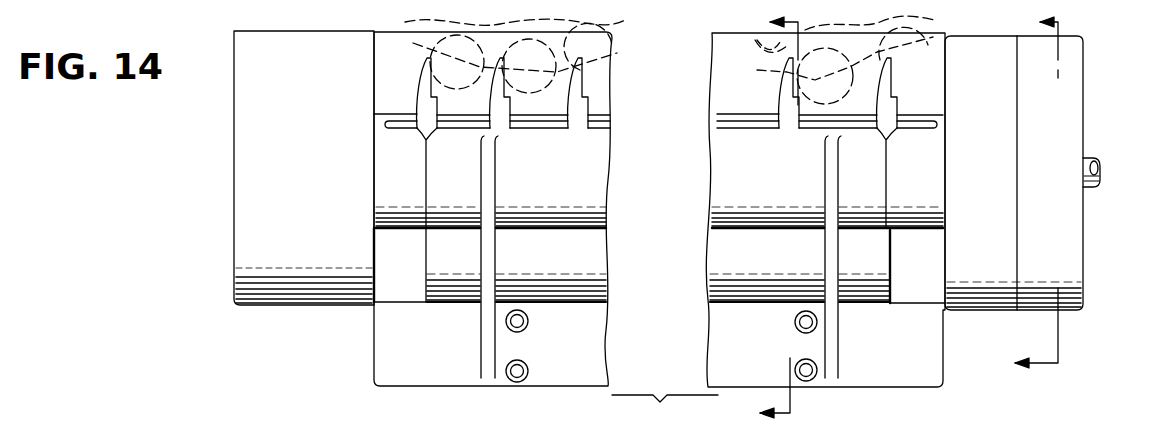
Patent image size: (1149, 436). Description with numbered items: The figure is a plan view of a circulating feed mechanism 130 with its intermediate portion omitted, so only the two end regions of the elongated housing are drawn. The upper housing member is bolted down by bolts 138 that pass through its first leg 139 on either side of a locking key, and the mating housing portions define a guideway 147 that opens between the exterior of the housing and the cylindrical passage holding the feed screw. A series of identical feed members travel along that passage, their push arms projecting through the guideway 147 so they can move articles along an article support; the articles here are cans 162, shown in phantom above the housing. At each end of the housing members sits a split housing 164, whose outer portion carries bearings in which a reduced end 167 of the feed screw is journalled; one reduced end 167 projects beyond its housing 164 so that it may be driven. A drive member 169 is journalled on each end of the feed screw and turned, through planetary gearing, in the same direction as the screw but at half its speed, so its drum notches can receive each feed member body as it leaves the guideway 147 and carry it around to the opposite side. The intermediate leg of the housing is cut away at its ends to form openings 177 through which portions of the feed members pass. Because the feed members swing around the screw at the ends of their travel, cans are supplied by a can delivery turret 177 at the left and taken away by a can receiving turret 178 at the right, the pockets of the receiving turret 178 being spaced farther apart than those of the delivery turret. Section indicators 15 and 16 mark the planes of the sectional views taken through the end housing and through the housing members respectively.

The section line 15- 15 is at (1035, 203).
The section line 16- 16 is at (759, 219).
The feed mechanism 130 is at (355, 318).
The bolts 138 is at (523, 362).
The first leg 139 is at (580, 380).
The guideway 147 is at (735, 130).
The cans 162 is at (459, 88).
The split housing 164 is at (248, 216).
The reduced end 167 is at (1095, 167).
The drive member 169 is at (934, 183).
The openings / can delivery turret 177 is at (406, 292).
The can receiving turret 178 is at (765, 57).